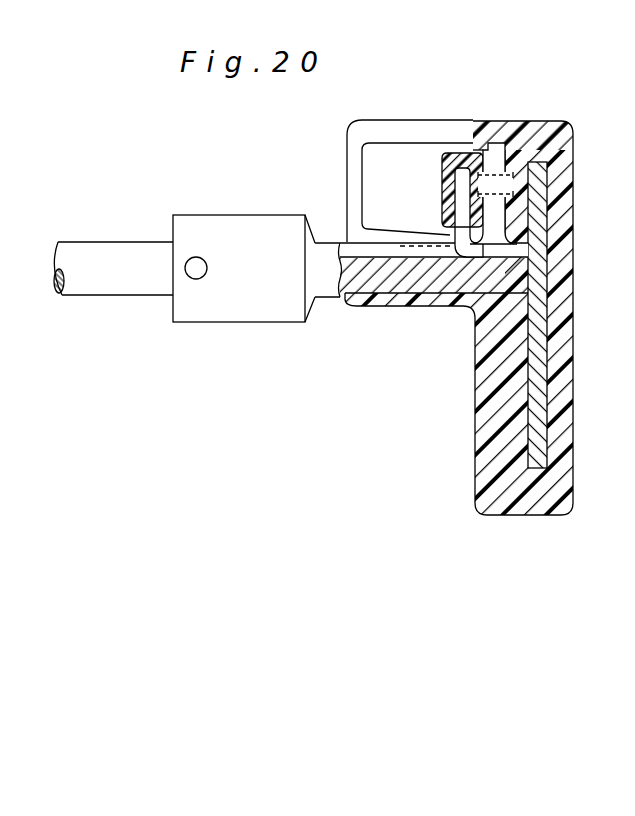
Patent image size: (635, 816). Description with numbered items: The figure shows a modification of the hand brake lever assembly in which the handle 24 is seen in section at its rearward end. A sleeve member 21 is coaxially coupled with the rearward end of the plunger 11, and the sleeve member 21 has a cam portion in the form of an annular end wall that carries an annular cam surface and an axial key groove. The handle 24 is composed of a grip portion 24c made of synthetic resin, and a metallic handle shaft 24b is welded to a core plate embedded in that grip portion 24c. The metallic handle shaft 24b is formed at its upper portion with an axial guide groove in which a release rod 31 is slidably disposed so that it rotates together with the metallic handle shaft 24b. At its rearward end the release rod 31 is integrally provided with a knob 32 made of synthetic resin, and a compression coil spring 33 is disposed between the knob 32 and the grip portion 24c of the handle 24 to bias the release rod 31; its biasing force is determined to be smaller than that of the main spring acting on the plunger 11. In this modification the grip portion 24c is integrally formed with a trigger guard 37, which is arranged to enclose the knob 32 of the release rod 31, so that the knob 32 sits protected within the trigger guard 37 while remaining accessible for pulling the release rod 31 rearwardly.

The plunger 11 is at (98, 288).
The sleeve member 21 is at (240, 315).
The handle 24 is at (573, 380).
The metallic handle shaft 24b is at (385, 290).
The grip portion 24c is at (537, 127).
The release rod 31 is at (385, 252).
The knob 32 is at (442, 192).
The compression coil spring 33 is at (547, 173).
The trigger guard 37 is at (347, 164).